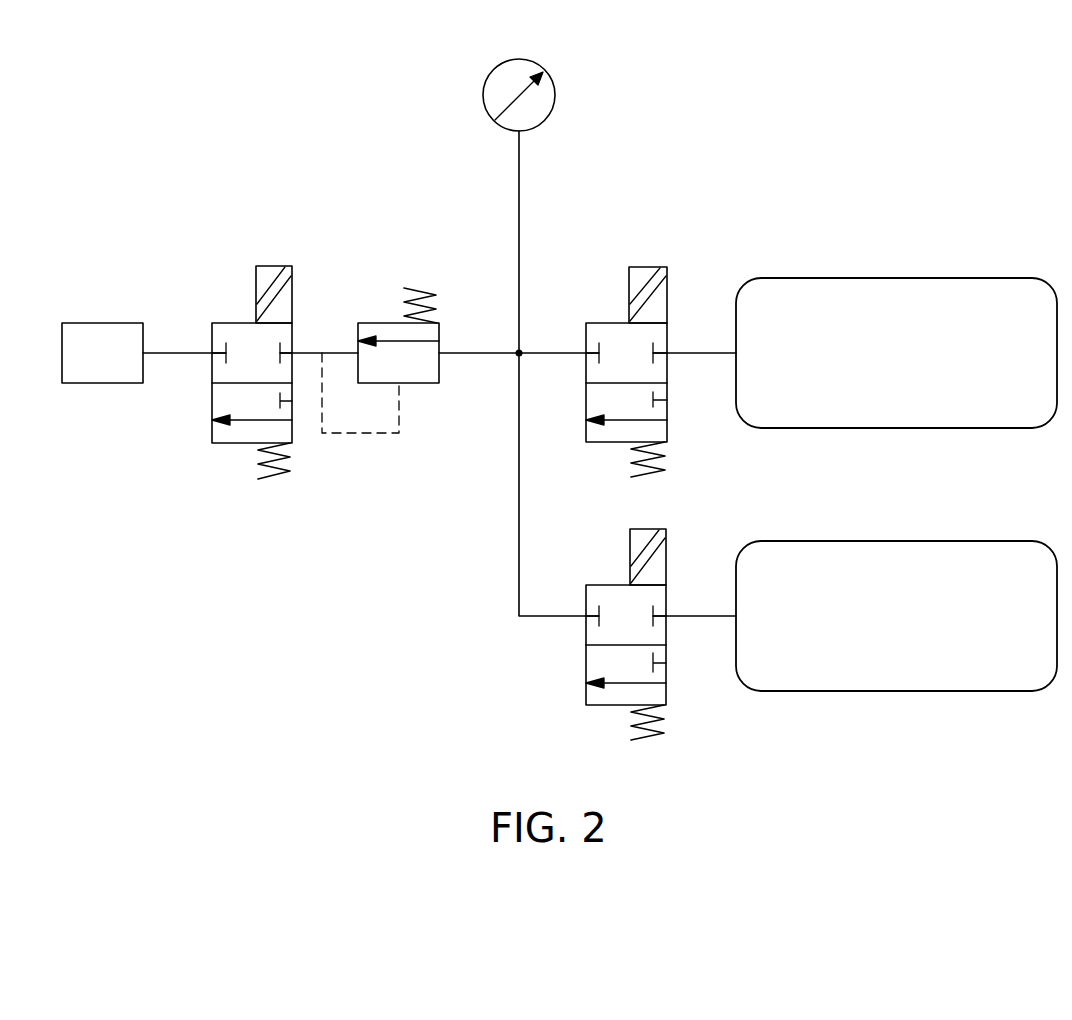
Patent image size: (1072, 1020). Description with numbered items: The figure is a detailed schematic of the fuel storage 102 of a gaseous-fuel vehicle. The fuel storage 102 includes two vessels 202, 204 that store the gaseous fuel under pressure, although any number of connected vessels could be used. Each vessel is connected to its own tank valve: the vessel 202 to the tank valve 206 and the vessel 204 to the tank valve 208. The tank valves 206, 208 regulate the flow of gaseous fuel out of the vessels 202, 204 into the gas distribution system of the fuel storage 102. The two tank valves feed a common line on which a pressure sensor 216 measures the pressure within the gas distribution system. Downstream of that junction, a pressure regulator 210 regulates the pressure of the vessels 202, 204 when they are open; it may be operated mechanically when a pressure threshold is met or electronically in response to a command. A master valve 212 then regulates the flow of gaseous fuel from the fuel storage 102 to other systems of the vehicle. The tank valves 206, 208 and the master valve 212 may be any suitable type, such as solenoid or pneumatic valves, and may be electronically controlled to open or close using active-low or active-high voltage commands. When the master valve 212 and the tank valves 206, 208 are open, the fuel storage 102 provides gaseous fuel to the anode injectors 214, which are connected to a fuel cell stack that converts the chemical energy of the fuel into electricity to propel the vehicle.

The fuel storage 102 is at (252, 133).
The vessel 202 is at (928, 278).
The vessel 204 is at (928, 541).
The tank valve 206 is at (598, 443).
The tank valve 208 is at (602, 585).
The pressure regulator 210 is at (422, 383).
The master valve 212 is at (222, 443).
The anode injectors 214 is at (107, 385).
The pressure sensor 216 is at (555, 92).